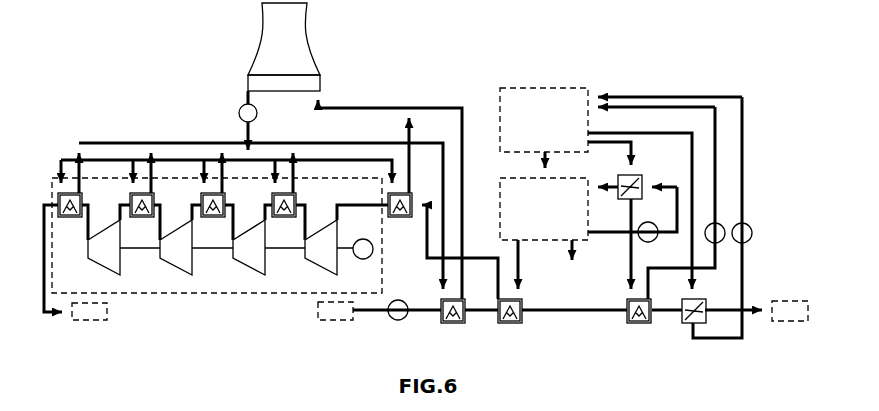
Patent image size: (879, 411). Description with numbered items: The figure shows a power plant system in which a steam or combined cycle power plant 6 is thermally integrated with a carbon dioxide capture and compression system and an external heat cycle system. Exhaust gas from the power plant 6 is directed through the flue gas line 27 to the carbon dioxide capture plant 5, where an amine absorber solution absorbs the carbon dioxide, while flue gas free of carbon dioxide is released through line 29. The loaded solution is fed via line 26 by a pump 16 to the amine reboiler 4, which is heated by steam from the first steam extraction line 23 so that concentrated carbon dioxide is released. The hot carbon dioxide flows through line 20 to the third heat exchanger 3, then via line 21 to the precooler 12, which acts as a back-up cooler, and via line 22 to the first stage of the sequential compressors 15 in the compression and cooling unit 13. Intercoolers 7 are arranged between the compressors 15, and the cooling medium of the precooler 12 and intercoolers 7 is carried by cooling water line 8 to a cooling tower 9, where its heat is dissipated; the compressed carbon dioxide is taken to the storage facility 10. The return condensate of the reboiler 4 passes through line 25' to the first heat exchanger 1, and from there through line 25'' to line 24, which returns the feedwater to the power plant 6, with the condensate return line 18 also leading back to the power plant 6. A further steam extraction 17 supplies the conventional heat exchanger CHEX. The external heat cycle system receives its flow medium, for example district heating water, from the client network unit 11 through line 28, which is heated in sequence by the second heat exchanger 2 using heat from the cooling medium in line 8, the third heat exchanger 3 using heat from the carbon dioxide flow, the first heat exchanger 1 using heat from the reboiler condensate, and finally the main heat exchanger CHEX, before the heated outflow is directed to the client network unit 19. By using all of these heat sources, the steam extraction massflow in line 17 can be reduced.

The first heat exchanger 1 is at (640, 323).
The second heat exchanger 2 is at (452, 323).
The third heat exchanger 3 is at (509, 323).
The amine reboiler 4 is at (631, 199).
The carbon dioxide capture plant 5 is at (544, 209).
The power plant 6 is at (544, 120).
The intercooler 7 is at (66, 218).
The cooling water line 8 is at (360, 146).
The cooling tower 9 is at (284, 47).
The carbon dioxide storage facility 10 is at (75, 262).
The client network inflow unit 11 is at (379, 311).
The precooler 12 is at (398, 217).
The carbon dioxide compression and cooling unit 13 is at (217, 236).
The compressor 15 is at (230, 247).
The pump 16 is at (257, 110).
The steam extraction line 17 is at (690, 162).
The recirculation line 18 is at (742, 127).
The client network outflow unit 19 is at (756, 311).
The carbon dioxide line 20 is at (519, 270).
The line for CO2 flow to precooler 21 is at (480, 258).
The line for CO2 flow from precooler to compressor 22 is at (345, 205).
The first steam extraction line 23 is at (628, 155).
The line for return condensate 24 is at (716, 167).
The line for return condensate to the first heat exchanger 25' is at (610, 248).
The line from first heat exchanger to feedwater pump 25'' is at (724, 282).
The line for amine solution 26 is at (606, 235).
The flue gas line 27 is at (543, 164).
The cycle line for external heat cycle system 28 is at (742, 318).
The flue gas line free of CO2 29 is at (569, 255).
The conventional heat exchanger CHEX is at (695, 323).